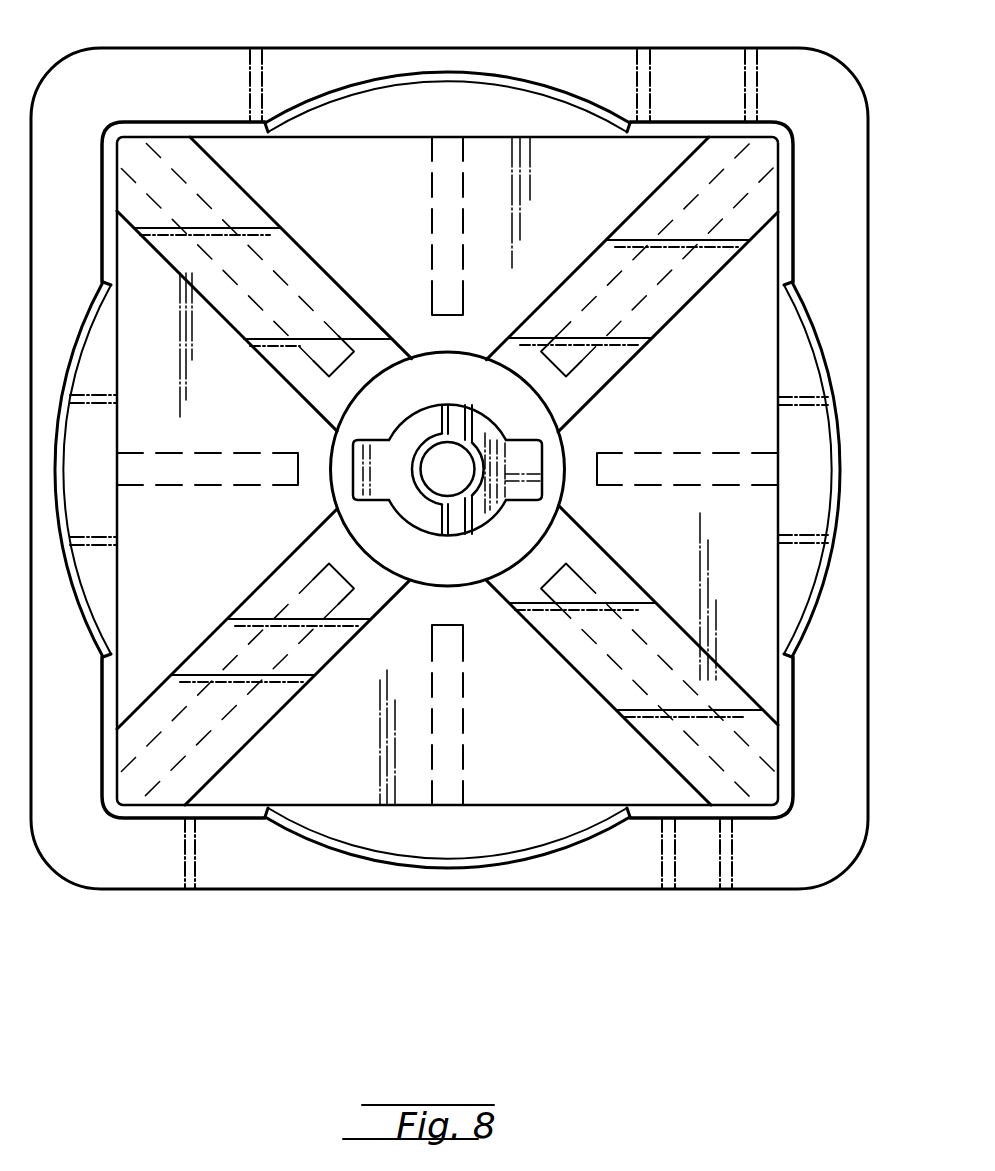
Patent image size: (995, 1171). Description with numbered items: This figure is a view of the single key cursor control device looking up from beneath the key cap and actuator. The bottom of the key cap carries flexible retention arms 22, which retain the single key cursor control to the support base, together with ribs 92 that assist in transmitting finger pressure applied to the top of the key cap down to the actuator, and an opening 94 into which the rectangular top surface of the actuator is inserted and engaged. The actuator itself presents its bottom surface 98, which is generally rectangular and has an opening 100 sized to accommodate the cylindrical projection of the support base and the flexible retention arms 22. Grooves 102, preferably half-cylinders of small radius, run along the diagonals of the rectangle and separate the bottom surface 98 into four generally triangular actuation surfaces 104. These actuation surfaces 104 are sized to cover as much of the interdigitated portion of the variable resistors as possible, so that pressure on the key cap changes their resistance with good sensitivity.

The flexible retention arms 22 is at (487, 440).
The ribs 92 is at (730, 184).
The opening 94 is at (663, 137).
The bottom surface 98 is at (372, 220).
The opening 100 is at (505, 540).
The grooves 102 is at (212, 195).
The actuation surfaces 104 is at (551, 208).